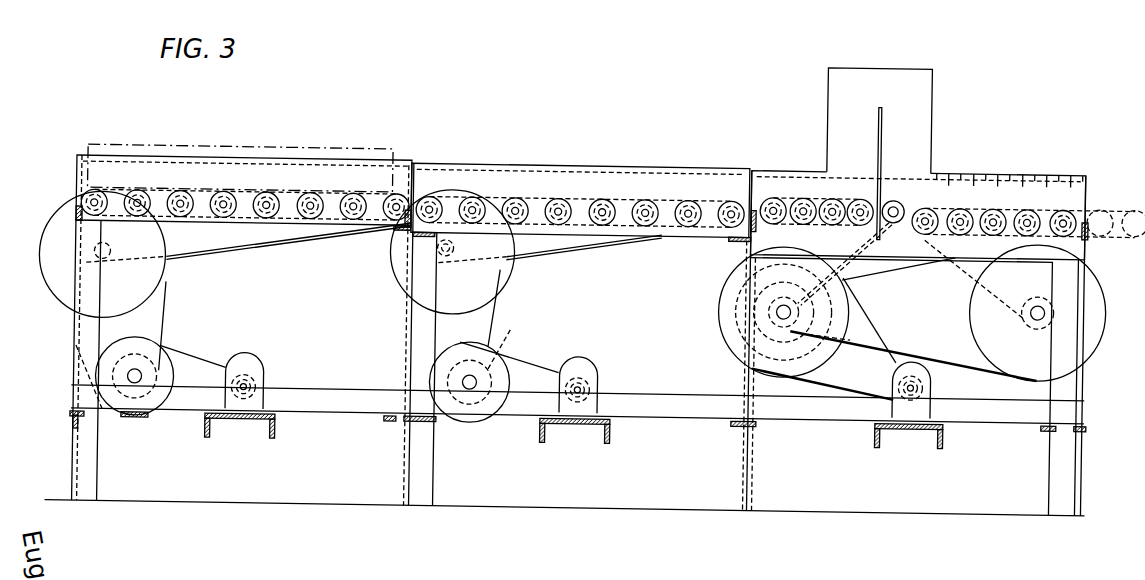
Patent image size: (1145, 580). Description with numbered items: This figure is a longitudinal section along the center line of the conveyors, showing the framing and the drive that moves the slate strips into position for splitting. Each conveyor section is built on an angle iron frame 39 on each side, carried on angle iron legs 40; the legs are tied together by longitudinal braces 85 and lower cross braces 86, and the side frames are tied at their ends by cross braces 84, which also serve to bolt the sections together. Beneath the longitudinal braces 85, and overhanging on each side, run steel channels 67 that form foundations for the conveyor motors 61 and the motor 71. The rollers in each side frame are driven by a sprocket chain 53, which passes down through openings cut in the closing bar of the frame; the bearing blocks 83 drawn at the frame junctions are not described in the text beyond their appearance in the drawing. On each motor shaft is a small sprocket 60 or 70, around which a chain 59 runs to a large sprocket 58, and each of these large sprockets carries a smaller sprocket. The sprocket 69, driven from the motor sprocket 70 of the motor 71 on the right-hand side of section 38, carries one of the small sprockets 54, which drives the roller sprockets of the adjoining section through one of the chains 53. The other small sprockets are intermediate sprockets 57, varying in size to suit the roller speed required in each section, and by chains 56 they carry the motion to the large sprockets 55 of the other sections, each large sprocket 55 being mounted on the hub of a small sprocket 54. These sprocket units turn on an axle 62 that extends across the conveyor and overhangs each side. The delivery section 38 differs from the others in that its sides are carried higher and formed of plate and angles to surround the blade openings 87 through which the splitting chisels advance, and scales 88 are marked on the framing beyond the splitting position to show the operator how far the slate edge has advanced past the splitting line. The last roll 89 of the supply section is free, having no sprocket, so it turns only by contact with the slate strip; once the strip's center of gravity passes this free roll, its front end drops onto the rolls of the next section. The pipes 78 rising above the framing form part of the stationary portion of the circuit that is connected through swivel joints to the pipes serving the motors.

The delivery section 38 is at (972, 181).
The angle iron frame 39 is at (247, 144).
The angle iron legs 40 is at (75, 362).
The sprocket chain 53 is at (259, 234).
The small sprocket 54 is at (1041, 307).
The large sprocket 55 is at (170, 255).
The chain 56 is at (169, 311).
The intermediate sprocket 57 is at (89, 403).
The large sprocket 58 is at (147, 415).
The chain 59 is at (193, 350).
The small sprocket 60 is at (266, 380).
The conveyor motor 61 is at (258, 352).
The axle 62 is at (97, 254).
The steel channel 67 is at (249, 415).
The sprocket 69 is at (740, 270).
The small sprocket 70 is at (894, 371).
The motor 71 is at (896, 353).
The pipe 78 is at (861, 56).
The hatched bearing block 83 is at (406, 223).
The cross brace 84 is at (77, 207).
The longitudinal brace 85 is at (366, 410).
The lower cross brace 86 is at (74, 425).
The blade opening 87 is at (881, 117).
The scale 88 is at (1030, 157).
The free roll 89 is at (401, 191).